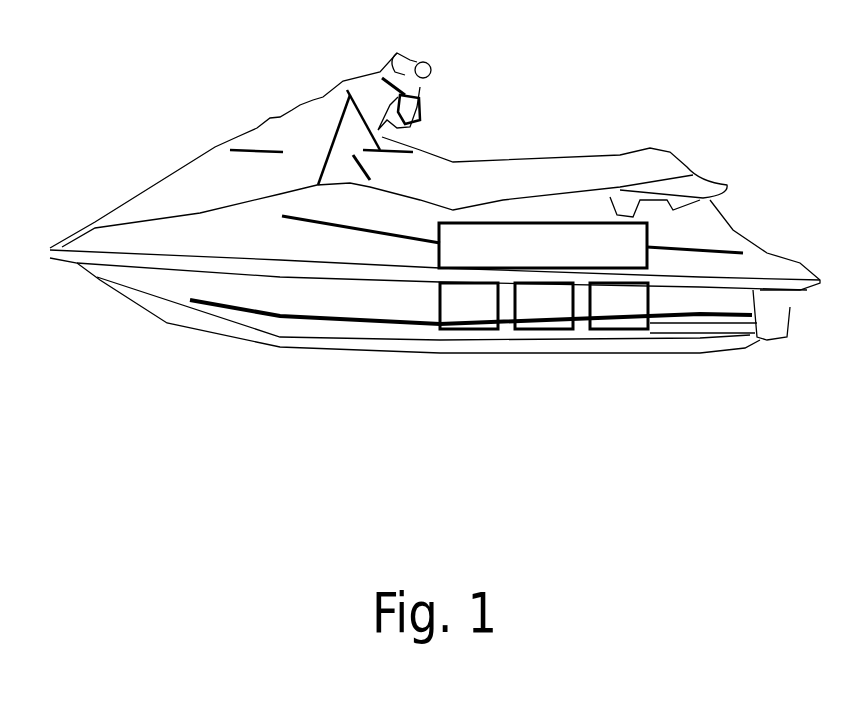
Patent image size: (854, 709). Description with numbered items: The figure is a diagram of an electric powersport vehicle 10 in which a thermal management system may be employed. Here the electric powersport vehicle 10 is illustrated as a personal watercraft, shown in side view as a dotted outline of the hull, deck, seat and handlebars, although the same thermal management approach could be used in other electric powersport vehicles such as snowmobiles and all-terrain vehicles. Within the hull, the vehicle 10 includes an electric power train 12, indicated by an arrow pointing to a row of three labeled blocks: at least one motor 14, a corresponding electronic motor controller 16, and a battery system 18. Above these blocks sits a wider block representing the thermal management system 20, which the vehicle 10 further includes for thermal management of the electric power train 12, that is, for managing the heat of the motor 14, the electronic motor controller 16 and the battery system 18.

The electric powersport vehicle 10 is at (323, 94).
The electric power train 12 is at (416, 302).
The motor 14 is at (619, 306).
The electronic motor controller 16 is at (544, 306).
The battery system 18 is at (469, 306).
The thermal management system 20 is at (543, 245).